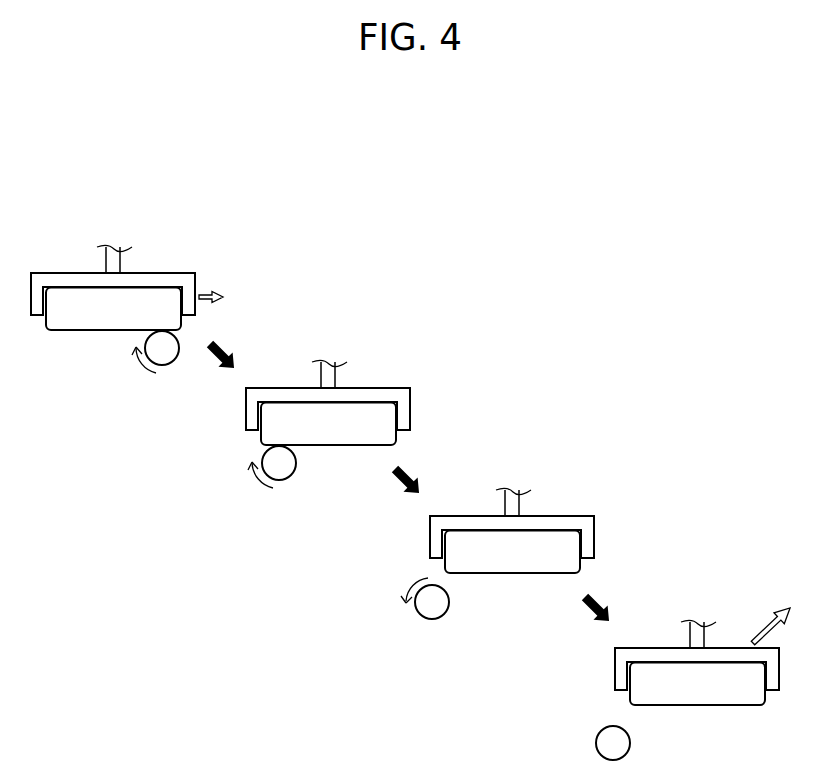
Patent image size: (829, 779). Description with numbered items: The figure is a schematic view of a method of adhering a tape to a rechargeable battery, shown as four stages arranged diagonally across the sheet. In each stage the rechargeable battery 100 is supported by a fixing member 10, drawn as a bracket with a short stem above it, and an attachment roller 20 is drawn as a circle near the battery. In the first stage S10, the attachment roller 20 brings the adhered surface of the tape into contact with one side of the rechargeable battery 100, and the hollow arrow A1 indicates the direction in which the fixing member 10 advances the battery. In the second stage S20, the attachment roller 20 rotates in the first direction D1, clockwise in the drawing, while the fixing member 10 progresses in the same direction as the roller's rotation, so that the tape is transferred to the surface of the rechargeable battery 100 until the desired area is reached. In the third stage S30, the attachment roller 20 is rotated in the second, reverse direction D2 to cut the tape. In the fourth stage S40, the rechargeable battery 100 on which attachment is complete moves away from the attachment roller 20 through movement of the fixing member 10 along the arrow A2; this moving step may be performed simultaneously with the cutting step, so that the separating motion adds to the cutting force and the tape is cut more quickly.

The fixing member 10 is at (165, 278).
The rechargeable battery 100 is at (72, 322).
The attachment roller 20 is at (167, 355).
The first direction D1 is at (143, 368).
The second direction D2 is at (417, 578).
The arrow direction A1 is at (222, 295).
The arrow A2 is at (780, 610).
The contacting step S10 is at (70, 228).
The attaching step S20 is at (292, 340).
The cutting step S30 is at (472, 469).
The moving step S40 is at (660, 608).